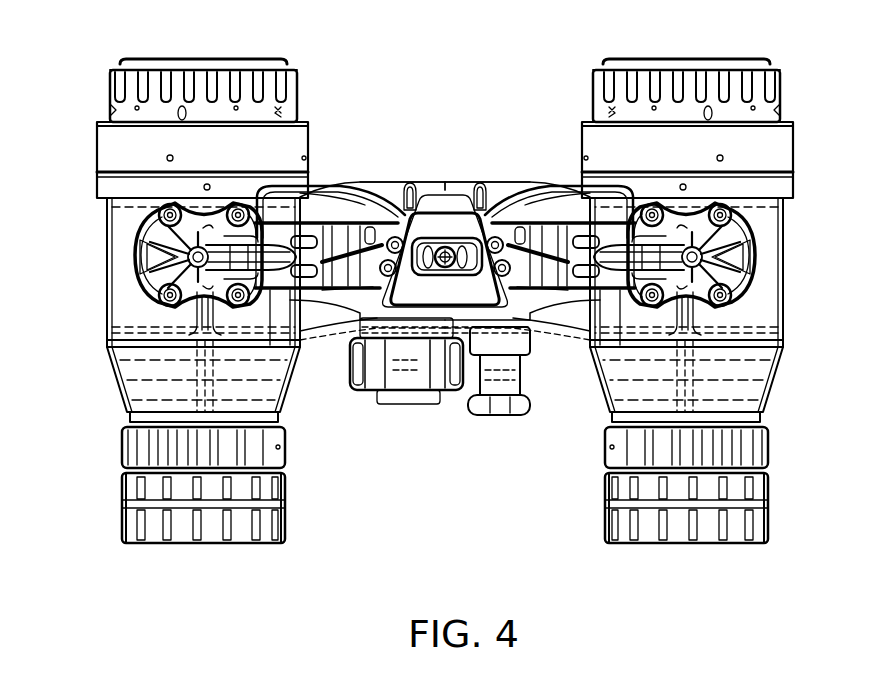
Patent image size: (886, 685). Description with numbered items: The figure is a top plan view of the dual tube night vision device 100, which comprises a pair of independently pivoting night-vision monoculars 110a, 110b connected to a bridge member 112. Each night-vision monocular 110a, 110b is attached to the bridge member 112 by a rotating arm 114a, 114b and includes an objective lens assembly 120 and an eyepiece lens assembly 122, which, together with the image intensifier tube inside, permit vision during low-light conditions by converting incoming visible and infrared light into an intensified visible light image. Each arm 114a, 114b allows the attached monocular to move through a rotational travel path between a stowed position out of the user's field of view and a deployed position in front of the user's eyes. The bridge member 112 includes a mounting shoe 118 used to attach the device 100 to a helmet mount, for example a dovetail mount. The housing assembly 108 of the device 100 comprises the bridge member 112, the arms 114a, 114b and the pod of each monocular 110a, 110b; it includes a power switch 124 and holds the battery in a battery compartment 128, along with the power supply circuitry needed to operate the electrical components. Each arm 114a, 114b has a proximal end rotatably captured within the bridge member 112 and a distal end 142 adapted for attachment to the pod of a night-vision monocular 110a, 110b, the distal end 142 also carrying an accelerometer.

The dual tube night vision device 100 is at (350, 192).
The housing assembly 108 is at (393, 195).
The night-vision monocular 110a is at (788, 150).
The night-vision monocular 110b is at (108, 158).
The bridge member 112 is at (512, 192).
The rotating arm 114a is at (735, 253).
The rotating arm 114b is at (157, 253).
The mounting shoe 118 is at (452, 205).
The objective lens assembly 120 is at (130, 532).
The eyepiece lens assembly 122 is at (126, 85).
The power switch 124 is at (512, 372).
The battery compartment 128 is at (370, 390).
The distal end 142 is at (145, 270).